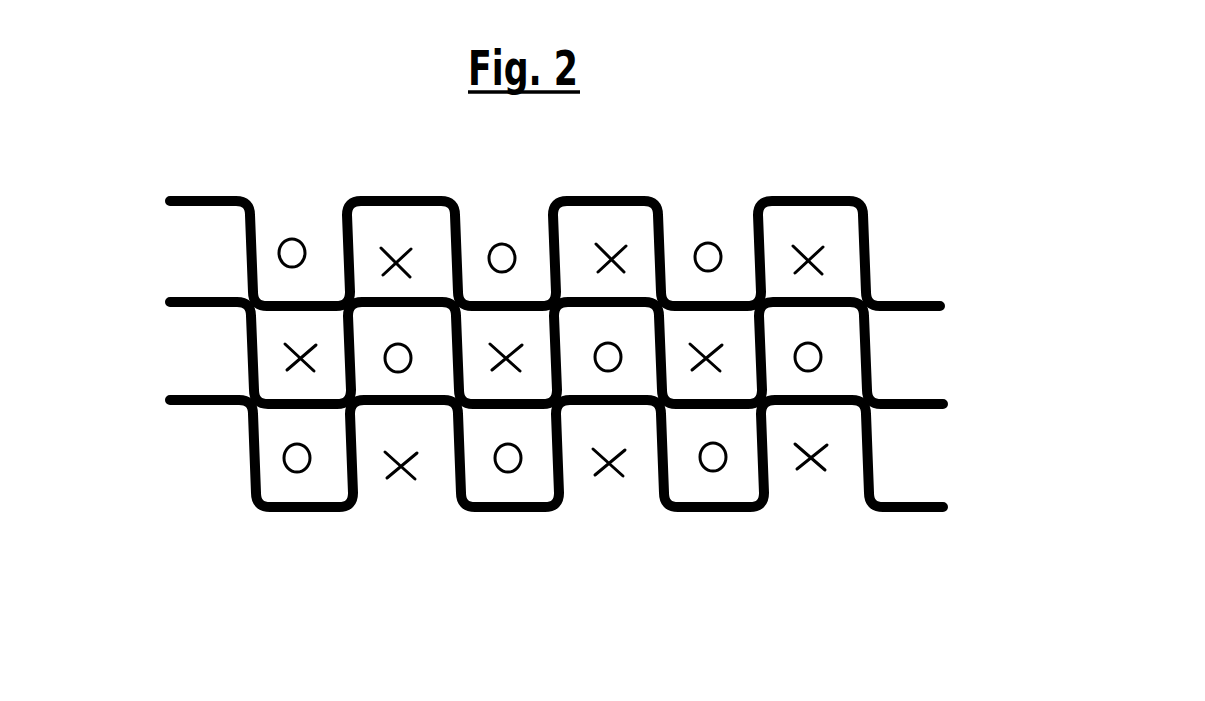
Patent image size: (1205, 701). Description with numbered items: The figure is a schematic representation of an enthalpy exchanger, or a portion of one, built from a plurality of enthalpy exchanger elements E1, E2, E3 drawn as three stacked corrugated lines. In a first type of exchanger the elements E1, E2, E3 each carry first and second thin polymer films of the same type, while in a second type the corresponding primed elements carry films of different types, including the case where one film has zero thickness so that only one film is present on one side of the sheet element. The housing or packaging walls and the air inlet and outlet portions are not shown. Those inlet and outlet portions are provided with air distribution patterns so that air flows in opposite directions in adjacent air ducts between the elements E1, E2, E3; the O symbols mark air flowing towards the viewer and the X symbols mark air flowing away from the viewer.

The enthalpy exchanger element E1 is at (920, 253).
The enthalpy exchanger element E2 is at (920, 365).
The enthalpy exchanger element E3 is at (928, 470).